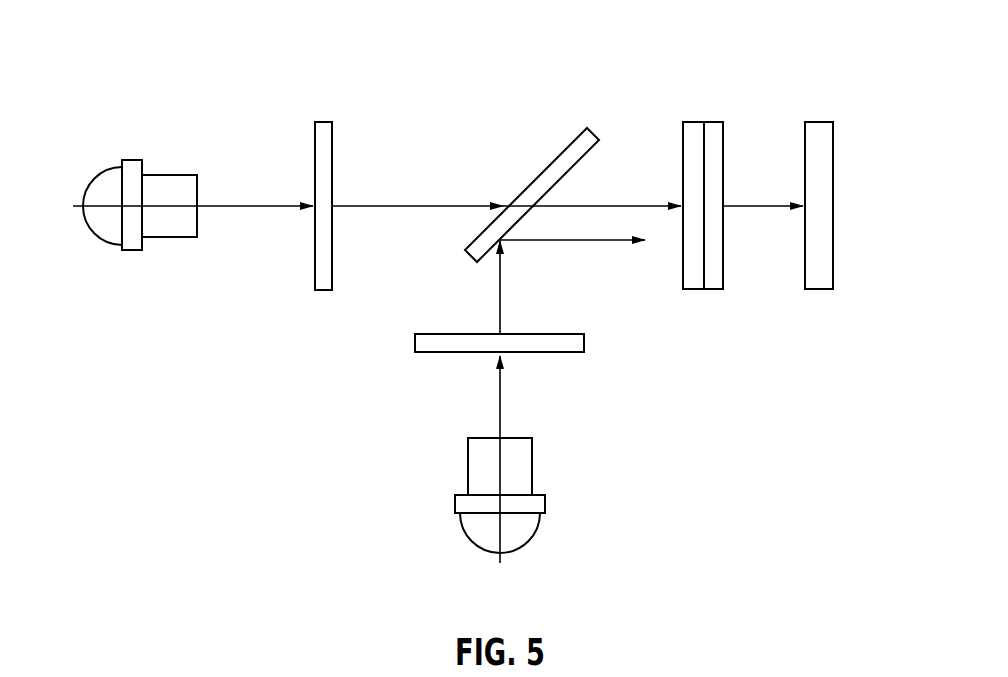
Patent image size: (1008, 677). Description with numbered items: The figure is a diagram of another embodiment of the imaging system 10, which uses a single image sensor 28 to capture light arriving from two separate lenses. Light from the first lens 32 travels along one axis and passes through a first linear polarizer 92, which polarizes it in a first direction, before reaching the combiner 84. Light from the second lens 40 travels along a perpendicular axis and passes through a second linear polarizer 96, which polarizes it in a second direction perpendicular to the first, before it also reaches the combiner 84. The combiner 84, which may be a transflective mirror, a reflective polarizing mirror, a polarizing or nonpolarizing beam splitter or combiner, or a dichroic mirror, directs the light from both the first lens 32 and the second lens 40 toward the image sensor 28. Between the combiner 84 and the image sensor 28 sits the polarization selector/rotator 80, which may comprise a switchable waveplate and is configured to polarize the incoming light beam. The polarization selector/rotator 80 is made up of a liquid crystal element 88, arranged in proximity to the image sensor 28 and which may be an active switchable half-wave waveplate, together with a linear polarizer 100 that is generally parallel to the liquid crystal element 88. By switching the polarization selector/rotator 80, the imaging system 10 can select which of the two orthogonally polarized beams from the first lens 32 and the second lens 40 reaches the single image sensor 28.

The imaging system 10 is at (168, 77).
The first lens 32 is at (98, 220).
The first linear polarizer 92 is at (315, 150).
The combiner 84 is at (548, 161).
The polarization selector/rotator 80 is at (704, 158).
The liquid crystal element 88 is at (683, 150).
The linear polarizer 100 is at (728, 181).
The image sensor 28 is at (835, 145).
The second linear polarizer 96 is at (545, 352).
The second lens 40 is at (520, 535).